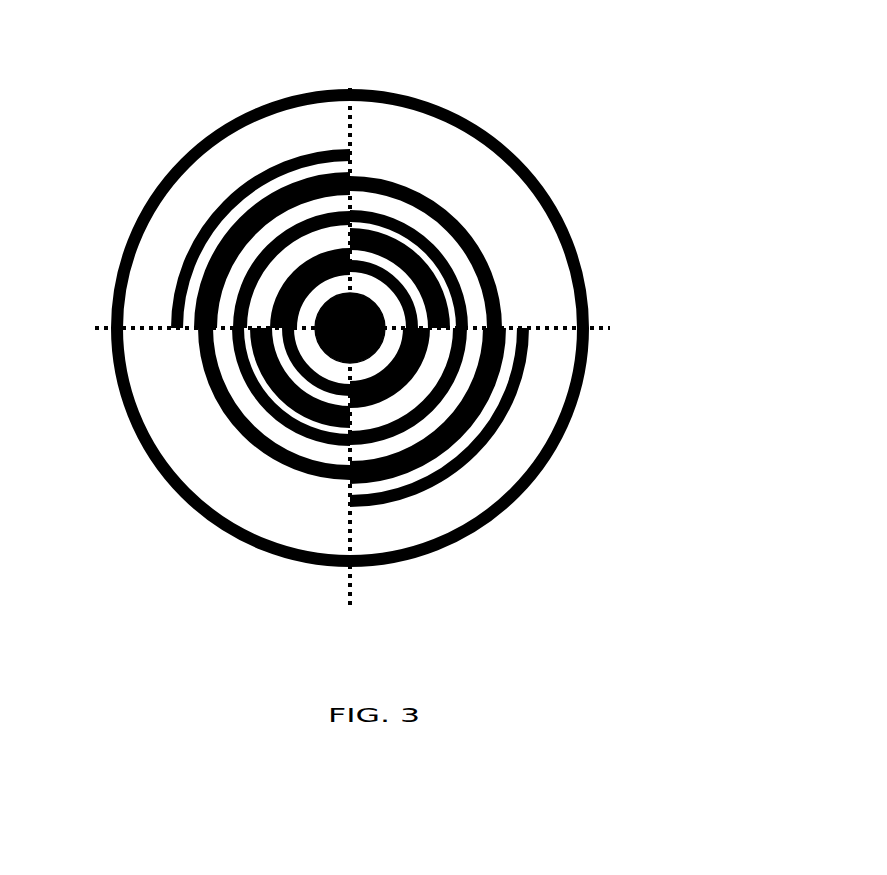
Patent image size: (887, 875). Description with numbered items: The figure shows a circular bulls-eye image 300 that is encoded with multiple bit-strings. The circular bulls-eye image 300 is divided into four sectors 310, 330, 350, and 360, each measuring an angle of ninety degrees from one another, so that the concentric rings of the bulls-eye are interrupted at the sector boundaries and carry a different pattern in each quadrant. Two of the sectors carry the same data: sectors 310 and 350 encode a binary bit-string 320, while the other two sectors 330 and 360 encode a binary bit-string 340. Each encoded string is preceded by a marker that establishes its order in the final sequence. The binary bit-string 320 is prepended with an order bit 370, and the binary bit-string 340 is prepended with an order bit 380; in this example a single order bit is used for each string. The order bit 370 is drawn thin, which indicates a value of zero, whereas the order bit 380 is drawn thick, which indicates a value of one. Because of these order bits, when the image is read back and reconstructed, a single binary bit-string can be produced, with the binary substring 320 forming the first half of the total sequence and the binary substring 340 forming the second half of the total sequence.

The circular bulls-eye image 300 is at (66, 27).
The sector 310 is at (658, 66).
The binary bit-string 320 is at (655, 121).
The sector 330 is at (658, 515).
The binary bit-string 340 is at (144, 130).
The sector 350 is at (145, 528).
The sector 360 is at (147, 75).
The order bit 370 is at (777, 203).
The order bit 380 is at (792, 415).